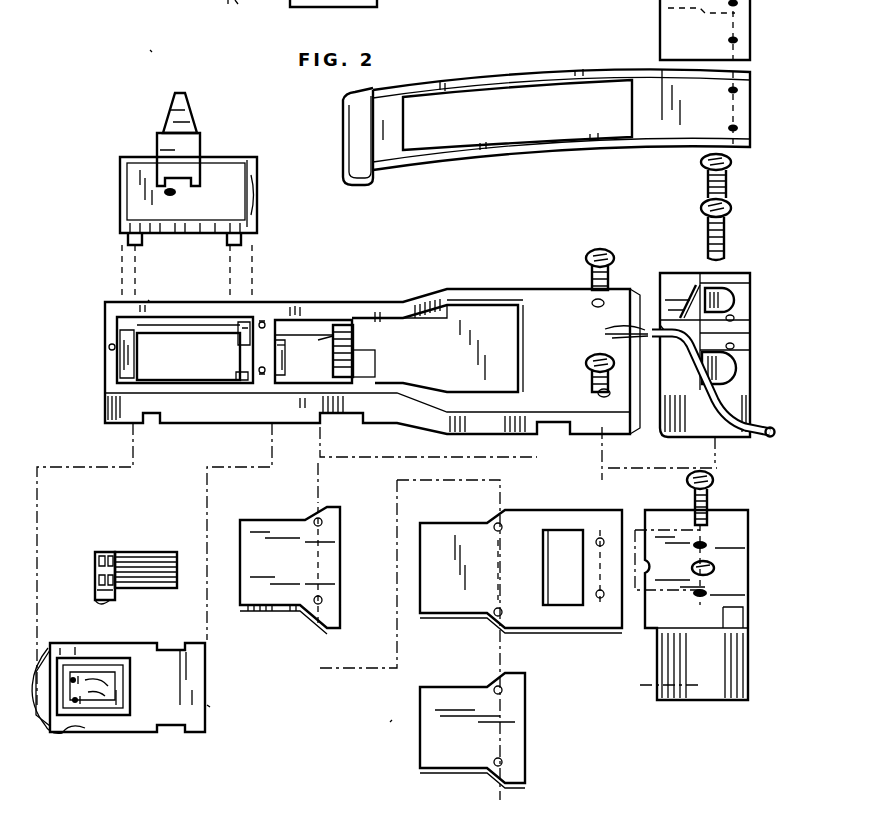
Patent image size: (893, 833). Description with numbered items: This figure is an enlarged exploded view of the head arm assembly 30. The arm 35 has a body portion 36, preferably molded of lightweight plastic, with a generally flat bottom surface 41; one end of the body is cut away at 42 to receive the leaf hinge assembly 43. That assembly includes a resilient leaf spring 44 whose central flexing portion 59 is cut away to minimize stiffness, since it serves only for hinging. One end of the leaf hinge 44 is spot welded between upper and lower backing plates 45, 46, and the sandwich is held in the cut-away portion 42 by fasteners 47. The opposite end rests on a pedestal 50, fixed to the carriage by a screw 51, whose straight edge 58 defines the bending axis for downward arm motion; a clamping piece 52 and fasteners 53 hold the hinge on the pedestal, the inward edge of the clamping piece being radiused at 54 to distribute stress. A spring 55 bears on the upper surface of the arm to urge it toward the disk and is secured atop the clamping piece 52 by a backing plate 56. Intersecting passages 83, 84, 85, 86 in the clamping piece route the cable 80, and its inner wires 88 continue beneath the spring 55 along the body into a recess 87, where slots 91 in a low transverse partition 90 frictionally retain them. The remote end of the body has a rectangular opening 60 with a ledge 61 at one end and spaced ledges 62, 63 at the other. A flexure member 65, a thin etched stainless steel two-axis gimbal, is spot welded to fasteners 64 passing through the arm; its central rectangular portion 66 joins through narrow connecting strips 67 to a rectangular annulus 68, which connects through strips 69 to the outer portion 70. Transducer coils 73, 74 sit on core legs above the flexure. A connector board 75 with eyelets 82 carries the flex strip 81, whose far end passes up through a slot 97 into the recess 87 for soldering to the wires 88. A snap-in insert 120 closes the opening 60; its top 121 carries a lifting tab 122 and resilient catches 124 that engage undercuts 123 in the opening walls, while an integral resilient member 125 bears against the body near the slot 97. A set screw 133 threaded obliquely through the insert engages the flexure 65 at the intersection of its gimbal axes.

The lock assembly 30 is at (195, 72).
The arm 35 is at (102, 300).
The body portion 36 is at (451, 294).
The flat bottom surface 41 is at (385, 425).
The cut away portion 42 is at (565, 436).
The leaf hinge assembly 43 is at (397, 716).
The leaf spring 44 is at (460, 605).
The upper backing plate 45 is at (276, 620).
The lower backing plate 46 is at (425, 752).
The fasteners 47 is at (585, 252).
The pedestal 50 is at (685, 700).
The screw 51 is at (692, 490).
The clamping piece 52 is at (668, 425).
The fasteners 53 is at (732, 212).
The radiused inward edge 54 is at (670, 432).
The spring 55 is at (502, 82).
The backing plate 56 is at (670, 35).
The straight edge 58 is at (645, 630).
The slot 59 is at (565, 527).
The rectangular opening 60 is at (165, 340).
The ledge 61 is at (120, 326).
The spaced ledge 62 is at (240, 336).
The spaced ledge 63 is at (240, 375).
The fasteners 64 is at (110, 353).
The flexure member 65 is at (210, 708).
The central rectangular portion 66 is at (105, 672).
The narrow connecting strips 67 is at (118, 690).
The rectangular annulus 68 is at (125, 705).
The connecting strips 69 is at (75, 660).
The outer portion 70 is at (200, 684).
The coil 73 is at (60, 680).
The coil 74 is at (48, 732).
The connector board 75 is at (100, 586).
The cable 80 is at (762, 428).
The flex strip 81 is at (148, 552).
The eyelets 82 is at (113, 552).
The front passage 83 is at (660, 330).
The passage 84 is at (696, 285).
The passage 85 is at (700, 395).
The passage 86 is at (748, 322).
The recess 87 is at (478, 340).
The wires 88 is at (605, 329).
The transverse partition 90 is at (345, 322).
The longitudinal slots 91 is at (333, 368).
The slot 97 is at (278, 360).
The snap-in insert 120 is at (236, 156).
The top 121 is at (230, 172).
The lifting tab 122 is at (168, 106).
The undercuts 123 is at (148, 302).
The resilient catches 124 is at (122, 242).
The resilient member 125 is at (262, 200).
The set screw 133 is at (174, 192).